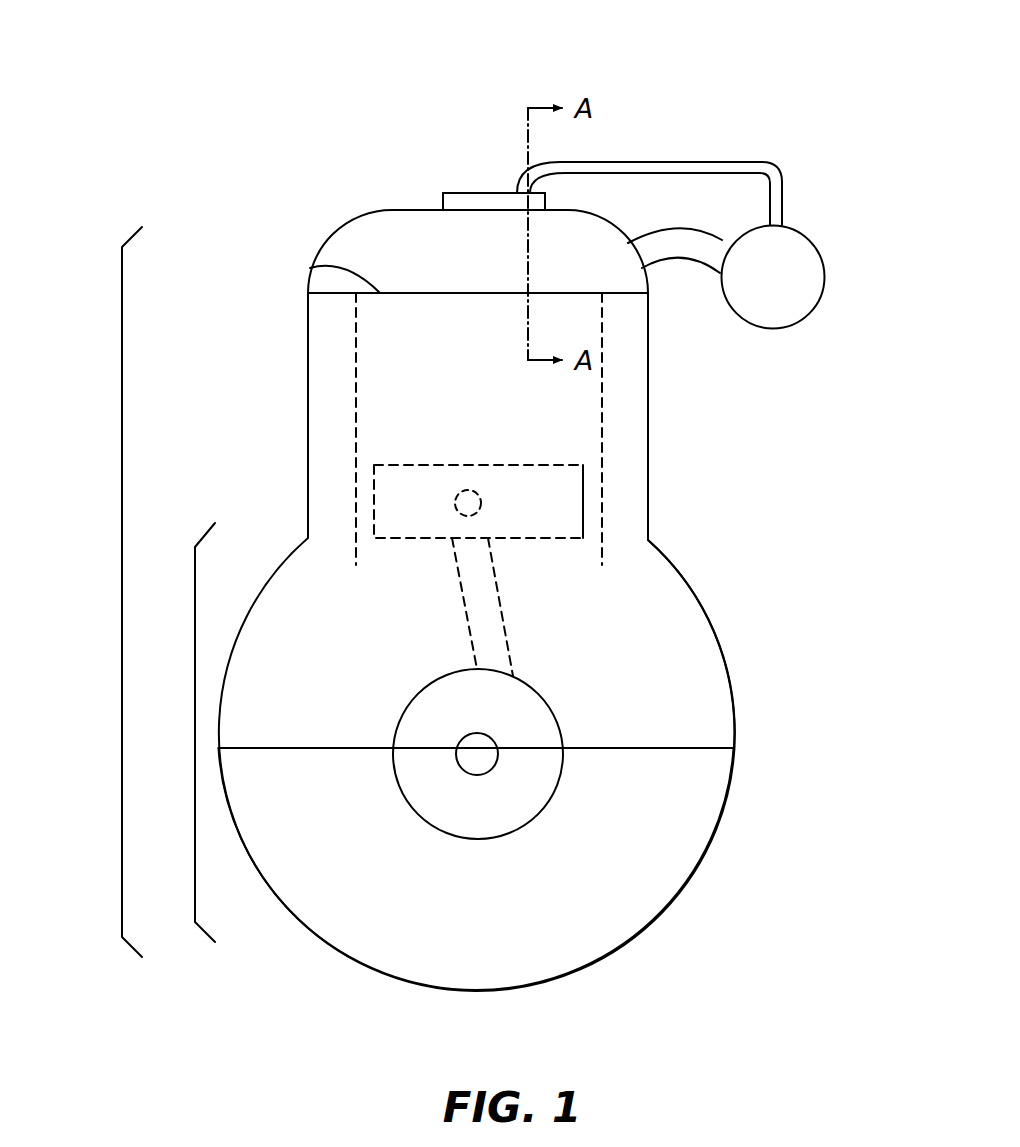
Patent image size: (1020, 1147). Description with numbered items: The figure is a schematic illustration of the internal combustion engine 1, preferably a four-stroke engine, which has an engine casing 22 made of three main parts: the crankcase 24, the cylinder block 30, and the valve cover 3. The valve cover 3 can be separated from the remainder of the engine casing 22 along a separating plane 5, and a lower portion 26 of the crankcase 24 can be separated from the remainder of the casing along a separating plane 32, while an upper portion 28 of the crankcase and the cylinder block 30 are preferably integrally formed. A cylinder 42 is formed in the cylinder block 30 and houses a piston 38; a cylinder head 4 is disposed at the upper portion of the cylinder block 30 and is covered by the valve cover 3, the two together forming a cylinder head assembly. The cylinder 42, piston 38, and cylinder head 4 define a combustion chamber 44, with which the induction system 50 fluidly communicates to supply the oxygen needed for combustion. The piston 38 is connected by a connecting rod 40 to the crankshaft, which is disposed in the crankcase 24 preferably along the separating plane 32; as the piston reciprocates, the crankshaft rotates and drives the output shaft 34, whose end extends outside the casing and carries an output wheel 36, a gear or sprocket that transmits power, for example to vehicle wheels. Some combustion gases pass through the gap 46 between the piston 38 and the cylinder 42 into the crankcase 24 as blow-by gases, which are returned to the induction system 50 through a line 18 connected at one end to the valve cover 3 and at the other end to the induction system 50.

The internal combustion engine 1 is at (390, 112).
The valve cover 3 is at (422, 210).
The cylinder head 4 is at (480, 237).
The separating plane 5 is at (320, 268).
The line 18 is at (672, 161).
The engine casing 22 is at (122, 578).
The crankcase 24 is at (195, 740).
The lower portion of the crankcase 26 is at (710, 842).
The upper portion of the crankcase 28 is at (718, 638).
The cylinder block 30 is at (308, 408).
The separating plane 32 is at (662, 747).
The output shaft 34 is at (461, 771).
The output wheel 36 is at (475, 840).
The piston 38 is at (557, 522).
The connecting rod 40 is at (491, 612).
The cylinder 42 is at (603, 318).
The combustion chamber 44 is at (479, 429).
The gap 46 is at (590, 498).
The induction system 50 is at (829, 278).